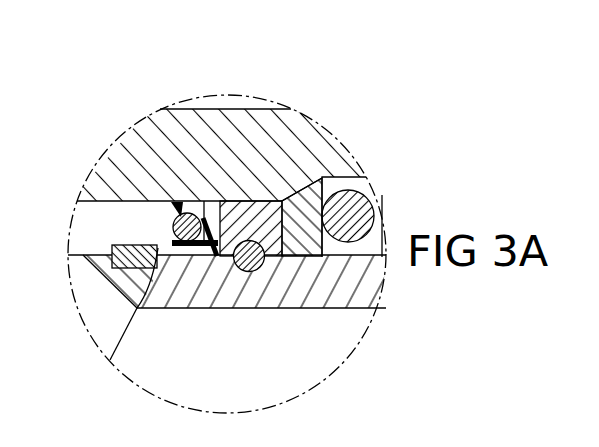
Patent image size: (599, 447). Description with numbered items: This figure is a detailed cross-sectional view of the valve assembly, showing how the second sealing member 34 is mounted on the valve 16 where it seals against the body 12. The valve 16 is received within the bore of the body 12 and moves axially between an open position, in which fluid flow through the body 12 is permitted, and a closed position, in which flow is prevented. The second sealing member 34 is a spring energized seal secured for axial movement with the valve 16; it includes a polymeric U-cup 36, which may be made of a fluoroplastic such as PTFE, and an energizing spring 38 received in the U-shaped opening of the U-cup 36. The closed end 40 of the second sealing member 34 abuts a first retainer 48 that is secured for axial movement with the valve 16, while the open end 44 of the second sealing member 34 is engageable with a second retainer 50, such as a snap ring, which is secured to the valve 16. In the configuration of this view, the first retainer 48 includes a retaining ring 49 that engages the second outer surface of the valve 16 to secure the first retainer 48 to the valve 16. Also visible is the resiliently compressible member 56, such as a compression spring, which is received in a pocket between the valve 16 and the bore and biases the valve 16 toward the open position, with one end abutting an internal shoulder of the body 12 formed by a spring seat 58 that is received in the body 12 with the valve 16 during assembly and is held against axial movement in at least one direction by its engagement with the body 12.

The body 12 is at (198, 95).
The valve 16 is at (207, 313).
The second sealing member 34 is at (187, 185).
The U-cup 36 is at (205, 201).
The energizing spring 38 is at (172, 203).
The closed end 40 is at (226, 221).
The open end 44 is at (172, 243).
The first retainer 48 is at (275, 257).
The retaining ring 49 is at (254, 270).
The second retainer 50 is at (137, 308).
The resiliently compressible member 56 is at (367, 204).
The spring seat 58 is at (306, 188).